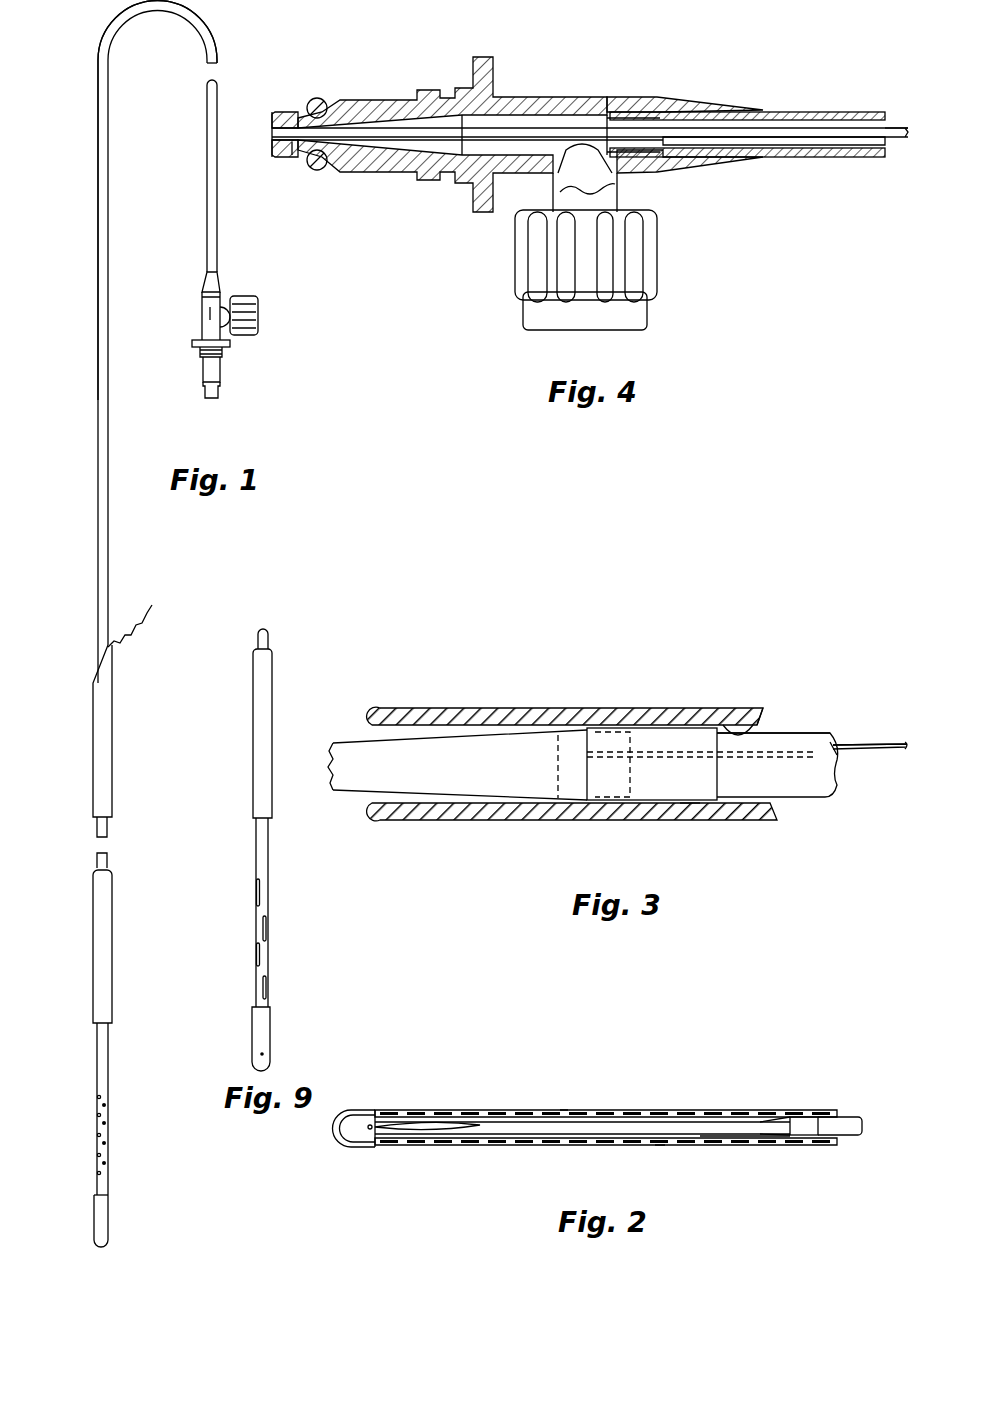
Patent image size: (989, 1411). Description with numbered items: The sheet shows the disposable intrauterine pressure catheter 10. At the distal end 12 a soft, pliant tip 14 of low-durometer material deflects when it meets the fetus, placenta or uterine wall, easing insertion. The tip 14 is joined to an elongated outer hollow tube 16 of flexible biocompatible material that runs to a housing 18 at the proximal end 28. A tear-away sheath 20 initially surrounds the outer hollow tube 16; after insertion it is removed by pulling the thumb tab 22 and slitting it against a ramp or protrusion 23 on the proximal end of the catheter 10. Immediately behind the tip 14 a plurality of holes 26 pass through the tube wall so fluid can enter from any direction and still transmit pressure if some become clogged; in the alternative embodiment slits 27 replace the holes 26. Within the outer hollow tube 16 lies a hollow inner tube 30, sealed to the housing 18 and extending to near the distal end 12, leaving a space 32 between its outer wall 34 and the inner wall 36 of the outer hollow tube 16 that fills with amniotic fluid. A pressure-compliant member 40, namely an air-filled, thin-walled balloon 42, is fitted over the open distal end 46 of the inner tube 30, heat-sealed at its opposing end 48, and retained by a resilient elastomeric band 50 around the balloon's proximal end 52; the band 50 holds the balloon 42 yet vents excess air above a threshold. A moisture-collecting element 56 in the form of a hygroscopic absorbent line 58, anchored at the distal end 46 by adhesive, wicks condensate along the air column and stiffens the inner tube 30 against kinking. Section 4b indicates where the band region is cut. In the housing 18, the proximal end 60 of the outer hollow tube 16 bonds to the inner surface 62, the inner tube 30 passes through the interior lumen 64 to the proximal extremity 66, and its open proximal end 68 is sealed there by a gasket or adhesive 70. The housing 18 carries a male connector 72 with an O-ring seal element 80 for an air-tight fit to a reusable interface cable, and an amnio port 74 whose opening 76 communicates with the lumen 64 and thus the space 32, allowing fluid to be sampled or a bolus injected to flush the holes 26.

In FIG. 1, the intrauterine pressure catheter 10 is at (80, 351).
In FIG. 1, the distal end 12 is at (147, 1213).
In FIG. 1, the soft pliant tip 14 is at (93, 1228).
In FIG. 9, the soft pliant tip 14 is at (254, 1063).
In FIG. 2, the soft pliant tip 14 is at (360, 1110).
In FIG. 1, the outer hollow tube 16 is at (98, 185).
In FIG. 9, the outer hollow tube 16 is at (262, 850).
In FIG. 4, the outer hollow tube 16 is at (830, 112).
In FIG. 3, the outer hollow tube 16 is at (663, 710).
In FIG. 2, the outer hollow tube 16 is at (540, 1113).
In FIG. 1, the housing 18 is at (202, 320).
In FIG. 4, the housing 18 is at (710, 80).
In FIG. 1, the tear-away sheath 20 is at (105, 770).
In FIG. 1, the thumb tab 22 is at (137, 604).
In FIG. 1, the ramp or protrusion 23 is at (200, 288).
In FIG. 1, the holes 26 is at (97, 1114).
In FIG. 2, the holes 26 is at (563, 1112).
In FIG. 9, the slits 27 is at (258, 958).
In FIG. 1, the proximal end 28 is at (219, 237).
In FIG. 4, the inner tube 30 is at (770, 140).
In FIG. 3, the inner tube 30 is at (807, 786).
In FIG. 2, the inner tube 30 is at (845, 1122).
In FIG. 4, the space or passage 32 is at (815, 145).
In FIG. 3, the space or passage 32 is at (443, 734).
In FIG. 2, the space or passage 32 is at (733, 1133).
In FIG. 3, the outer wall 34 is at (779, 733).
In FIG. 3, the inner wall 36 is at (753, 725).
In FIG. 2, the pressure-compliant member 40 is at (478, 1123).
In FIG. 3, the balloon 42 is at (513, 760).
In FIG. 2, the balloon 42 is at (510, 1127).
In FIG. 3, the distal end of inner tube 46 is at (683, 802).
In FIG. 2, the opposing end of balloon 48 is at (370, 1127).
In FIG. 3, the resilient elastomeric band 50 is at (598, 727).
In FIG. 2, the resilient elastomeric band 50 is at (805, 1123).
In FIG. 3, the proximal end of balloon 52 is at (630, 742).
In FIG. 3, the moisture-collecting element 56 is at (888, 706).
In FIG. 4, the absorbent line 58 is at (890, 142).
In FIG. 3, the absorbent line 58 is at (847, 745).
In FIG. 4, the proximal end of outer hollow tube 60 is at (630, 97).
In FIG. 4, the inner surface of housing 62 is at (582, 118).
In FIG. 4, the interior lumen 64 is at (525, 115).
In FIG. 4, the proximal extremity of housing 66 is at (277, 157).
In FIG. 4, the proximal end of inner tube 68 is at (292, 160).
In FIG. 4, the sealing gasket or adhesive 70 is at (268, 112).
In FIG. 1, the male connector 72 is at (220, 369).
In FIG. 4, the male connector 72 is at (380, 100).
In FIG. 1, the amnio port 74 is at (258, 302).
In FIG. 4, the amnio port 74 is at (657, 260).
In FIG. 4, the opening 76 is at (560, 163).
In FIG. 1, the O-ring seal element 80 is at (203, 383).
In FIG. 4, the O-ring seal element 80 is at (320, 98).
In FIG. 3, the section line 4b is at (557, 770).